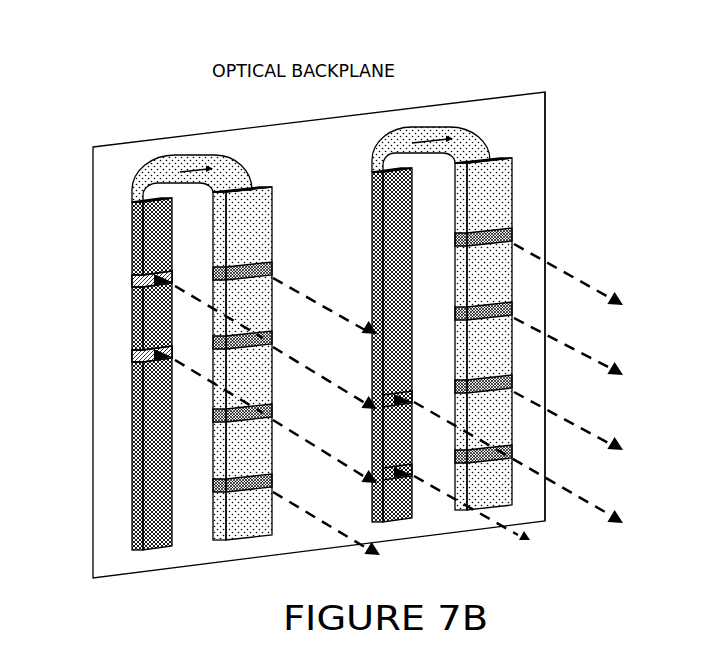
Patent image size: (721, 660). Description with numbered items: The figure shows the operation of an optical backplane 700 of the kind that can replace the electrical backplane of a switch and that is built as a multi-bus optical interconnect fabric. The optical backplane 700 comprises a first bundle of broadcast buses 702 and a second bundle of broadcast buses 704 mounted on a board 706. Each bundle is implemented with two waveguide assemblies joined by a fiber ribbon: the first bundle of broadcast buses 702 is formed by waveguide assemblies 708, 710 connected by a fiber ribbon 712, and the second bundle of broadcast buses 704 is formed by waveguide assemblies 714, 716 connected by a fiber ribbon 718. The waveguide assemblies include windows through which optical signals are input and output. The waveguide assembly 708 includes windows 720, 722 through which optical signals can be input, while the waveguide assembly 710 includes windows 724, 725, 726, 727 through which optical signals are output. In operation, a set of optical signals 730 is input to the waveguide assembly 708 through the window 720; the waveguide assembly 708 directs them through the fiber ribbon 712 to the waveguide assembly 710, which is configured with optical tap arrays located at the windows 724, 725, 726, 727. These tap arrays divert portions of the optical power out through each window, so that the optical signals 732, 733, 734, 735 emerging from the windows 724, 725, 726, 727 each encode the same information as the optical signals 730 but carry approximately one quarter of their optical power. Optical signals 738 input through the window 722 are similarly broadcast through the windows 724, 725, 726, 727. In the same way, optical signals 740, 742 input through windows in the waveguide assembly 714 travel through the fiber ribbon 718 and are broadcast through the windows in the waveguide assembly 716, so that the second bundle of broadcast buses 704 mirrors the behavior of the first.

The optical backplane 700 is at (516, 48).
The first bundle of broadcast buses 702 is at (118, 134).
The second bundle of broadcast buses 704 is at (522, 133).
The board 706 is at (532, 185).
The waveguide assembly 708 is at (152, 552).
The waveguide assembly 710 is at (247, 542).
The fiber ribbon 712 is at (197, 162).
The waveguide assembly 714 is at (400, 522).
The waveguide assembly 716 is at (517, 510).
The fiber ribbon 718 is at (436, 125).
The window 720 is at (143, 275).
The window 722 is at (140, 349).
The window 724 is at (270, 268).
The window 725 is at (270, 340).
The window 726 is at (268, 413).
The window 727 is at (268, 485).
The optical signals 730 is at (200, 298).
The optical signals 732 is at (333, 312).
The optical signals 733 is at (340, 386).
The optical signals 734 is at (340, 460).
The optical signals 735 is at (340, 530).
The optical signals 738 is at (200, 372).
The optical signals 740 is at (517, 462).
The optical signals 742 is at (526, 543).